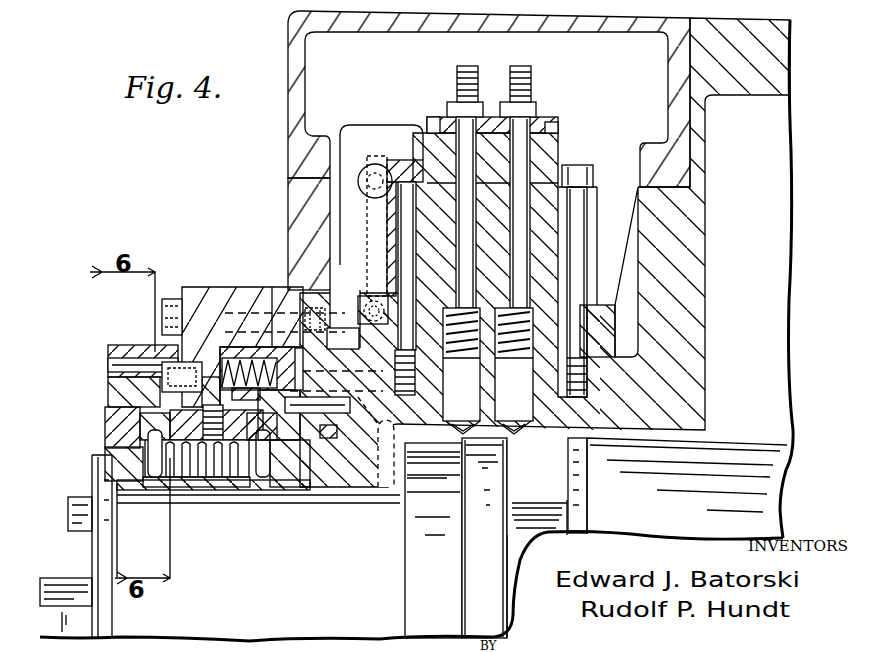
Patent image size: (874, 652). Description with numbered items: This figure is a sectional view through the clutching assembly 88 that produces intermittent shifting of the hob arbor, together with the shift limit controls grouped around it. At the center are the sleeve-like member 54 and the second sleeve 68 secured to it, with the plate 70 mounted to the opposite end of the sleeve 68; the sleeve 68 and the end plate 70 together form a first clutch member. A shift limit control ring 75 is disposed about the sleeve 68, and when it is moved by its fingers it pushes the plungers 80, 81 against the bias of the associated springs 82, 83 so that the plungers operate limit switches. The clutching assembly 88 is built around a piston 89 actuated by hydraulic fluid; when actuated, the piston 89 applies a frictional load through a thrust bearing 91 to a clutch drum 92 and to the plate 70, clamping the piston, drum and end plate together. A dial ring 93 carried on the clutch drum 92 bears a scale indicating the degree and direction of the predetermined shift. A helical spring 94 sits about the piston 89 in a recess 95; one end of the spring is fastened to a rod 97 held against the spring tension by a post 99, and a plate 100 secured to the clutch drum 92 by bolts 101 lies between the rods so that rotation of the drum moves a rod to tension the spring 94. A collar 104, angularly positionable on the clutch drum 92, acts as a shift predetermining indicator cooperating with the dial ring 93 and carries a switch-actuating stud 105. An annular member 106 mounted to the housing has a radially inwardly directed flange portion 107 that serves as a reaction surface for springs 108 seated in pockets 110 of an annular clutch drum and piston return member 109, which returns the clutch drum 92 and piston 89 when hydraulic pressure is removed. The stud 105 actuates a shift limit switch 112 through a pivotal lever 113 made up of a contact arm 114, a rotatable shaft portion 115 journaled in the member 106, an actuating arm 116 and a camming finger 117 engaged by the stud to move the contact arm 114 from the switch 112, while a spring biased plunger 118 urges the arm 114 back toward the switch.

The sleeve-like member 54 is at (715, 449).
The second sleeve 68 is at (535, 515).
The plate 70 is at (98, 550).
The shift limit control ring 75 is at (488, 468).
The plunger 80 is at (455, 427).
The plunger 81 is at (518, 427).
The spring 82 is at (463, 250).
The spring 83 is at (515, 250).
The clutching assembly 88 is at (229, 258).
The piston 89 is at (288, 458).
The thrust bearing 91 is at (150, 470).
The clutch drum 92 is at (122, 436).
The dial ring 93 is at (108, 418).
The helical spring 94 is at (228, 464).
The recess 95 is at (247, 430).
The rod 97 is at (157, 453).
The post 99 is at (290, 440).
The plate 100 is at (203, 432).
The bolts 101 is at (205, 420).
The collar 104 is at (180, 390).
The switch-actuating stud 105 is at (126, 360).
The annular member 106 is at (246, 290).
The radially inwardly directed flange portion 107 is at (219, 357).
The springs 108 is at (343, 339).
The annular clutch drum and piston return member 109 is at (276, 292).
The pockets 110 is at (218, 290).
The shift limit switch 112 is at (367, 136).
The pivotal lever 113 is at (384, 157).
The contact arm 114 is at (398, 234).
The rotatable shaft portion 115 is at (389, 453).
The actuating arm 116 is at (178, 335).
The camming finger 117 is at (112, 366).
The spring biased plunger 118 is at (376, 300).